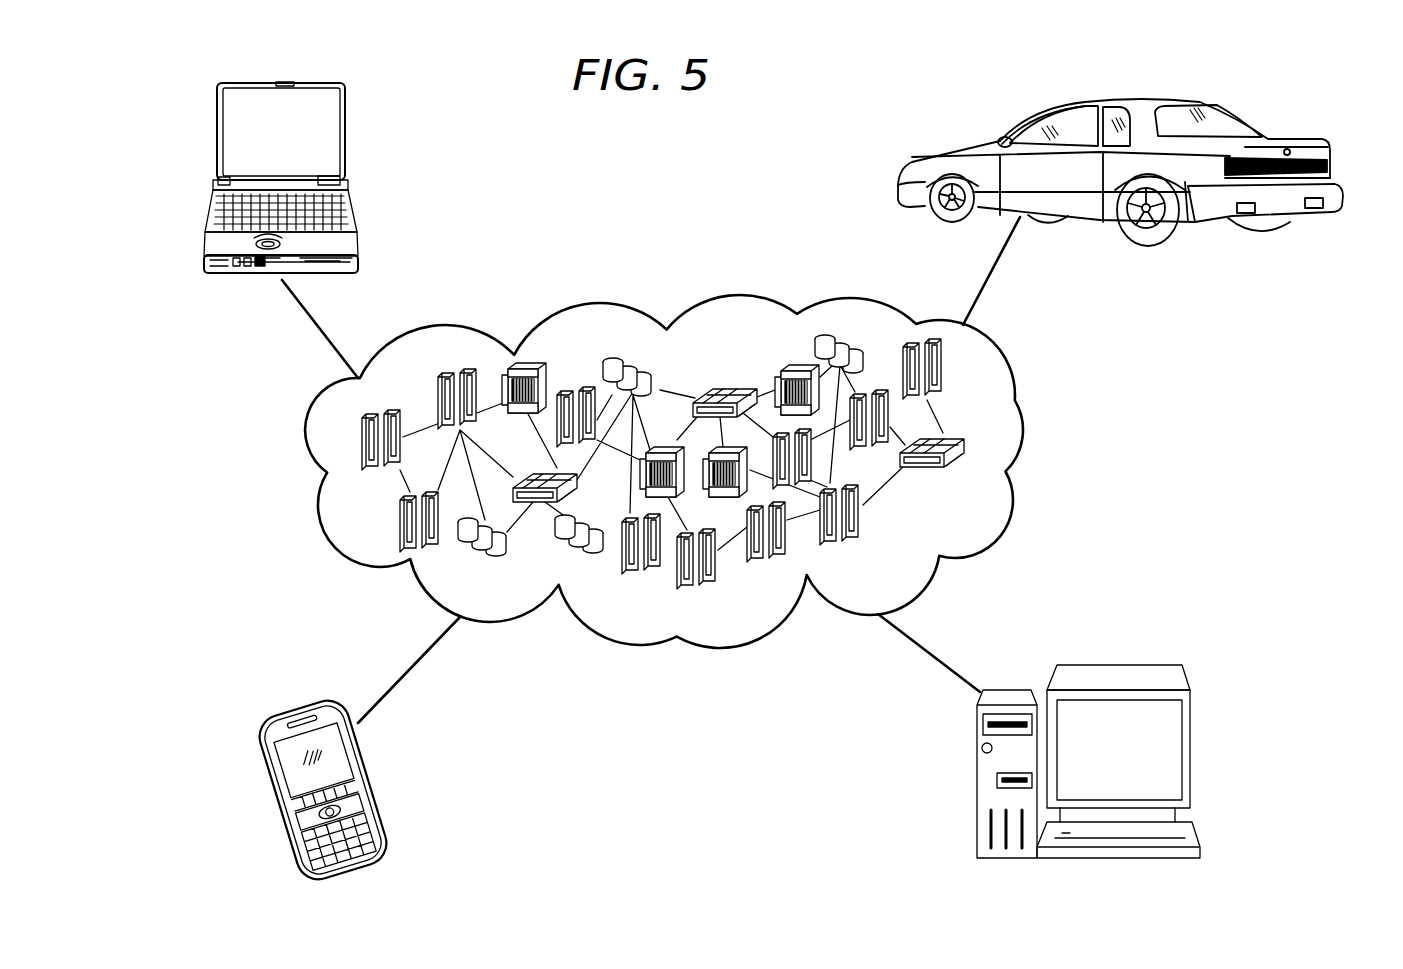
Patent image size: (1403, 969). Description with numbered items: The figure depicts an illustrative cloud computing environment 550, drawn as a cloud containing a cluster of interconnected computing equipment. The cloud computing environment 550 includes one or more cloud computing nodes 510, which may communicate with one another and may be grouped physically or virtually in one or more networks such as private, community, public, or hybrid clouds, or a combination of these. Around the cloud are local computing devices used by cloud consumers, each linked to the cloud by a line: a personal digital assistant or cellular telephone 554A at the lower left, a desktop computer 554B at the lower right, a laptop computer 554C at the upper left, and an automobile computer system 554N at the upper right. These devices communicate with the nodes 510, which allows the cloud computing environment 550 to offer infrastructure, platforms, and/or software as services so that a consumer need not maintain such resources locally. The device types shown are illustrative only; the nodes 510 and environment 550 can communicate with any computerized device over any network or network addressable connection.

The cloud computing nodes 510 is at (968, 475).
The cloud computing environment 550 is at (1015, 393).
The personal digital assistant (PDA) or cellular telephone 554A is at (265, 778).
The desktop computer 554B is at (1120, 665).
The laptop computer 554C is at (215, 128).
The automobile computer system 554N is at (1300, 142).